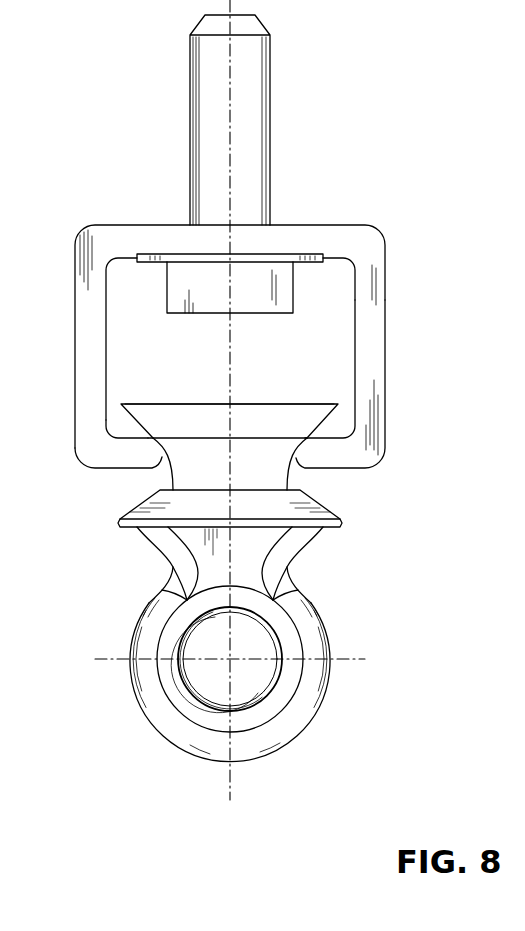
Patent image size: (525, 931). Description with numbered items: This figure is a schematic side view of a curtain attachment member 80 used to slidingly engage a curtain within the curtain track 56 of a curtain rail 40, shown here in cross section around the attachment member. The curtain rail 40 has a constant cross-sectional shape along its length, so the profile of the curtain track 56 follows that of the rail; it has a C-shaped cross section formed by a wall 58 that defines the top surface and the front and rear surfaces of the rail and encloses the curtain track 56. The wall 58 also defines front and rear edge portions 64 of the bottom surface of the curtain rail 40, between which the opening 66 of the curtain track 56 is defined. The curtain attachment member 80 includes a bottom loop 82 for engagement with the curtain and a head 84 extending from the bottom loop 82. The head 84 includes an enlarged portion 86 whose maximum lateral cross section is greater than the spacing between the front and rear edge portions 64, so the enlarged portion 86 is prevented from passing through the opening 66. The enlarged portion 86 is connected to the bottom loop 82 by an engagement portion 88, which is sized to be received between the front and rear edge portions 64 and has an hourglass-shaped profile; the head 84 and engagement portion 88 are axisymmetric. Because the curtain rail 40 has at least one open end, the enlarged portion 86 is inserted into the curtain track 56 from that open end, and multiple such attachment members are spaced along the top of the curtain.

The curtain rail 40 is at (365, 210).
The curtain track 56 is at (130, 288).
The wall 58 is at (375, 272).
The front and rear edge portions 64 is at (115, 455).
The opening 66 is at (173, 470).
The curtain attachment member 80 is at (358, 540).
The bottom loop 82 is at (295, 712).
The head 84 is at (352, 415).
The enlarged portion 86 is at (153, 402).
The engagement portion 88 is at (293, 482).